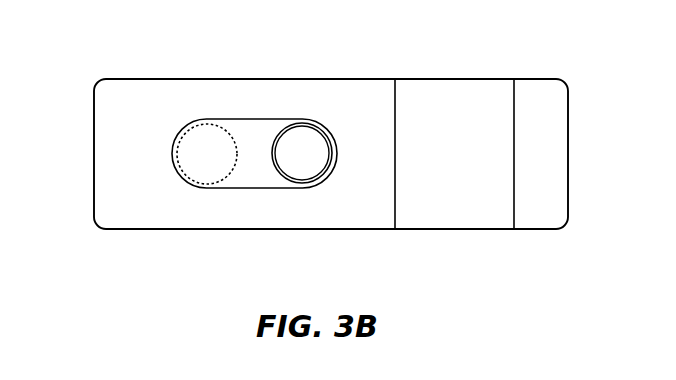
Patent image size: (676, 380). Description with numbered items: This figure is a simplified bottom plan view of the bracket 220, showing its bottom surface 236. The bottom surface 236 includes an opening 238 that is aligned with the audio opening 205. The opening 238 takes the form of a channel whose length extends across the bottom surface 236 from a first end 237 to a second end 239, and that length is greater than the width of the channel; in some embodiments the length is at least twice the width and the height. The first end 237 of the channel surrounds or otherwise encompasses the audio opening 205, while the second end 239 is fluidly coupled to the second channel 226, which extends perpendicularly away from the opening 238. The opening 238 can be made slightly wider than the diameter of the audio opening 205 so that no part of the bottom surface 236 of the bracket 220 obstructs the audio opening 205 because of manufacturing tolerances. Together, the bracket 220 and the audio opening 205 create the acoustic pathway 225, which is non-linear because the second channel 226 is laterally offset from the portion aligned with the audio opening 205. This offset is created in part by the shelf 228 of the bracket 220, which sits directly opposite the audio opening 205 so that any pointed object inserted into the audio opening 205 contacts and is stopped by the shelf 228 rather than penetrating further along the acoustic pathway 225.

The bracket 220 is at (352, 128).
The bottom surface 236 is at (137, 210).
The first end 237 is at (104, 151).
The audio opening 205 is at (142, 132).
The shelf 228 is at (192, 137).
The opening 238 is at (254, 115).
The second channel 226 is at (330, 136).
The acoustic pathway 225 is at (280, 192).
The second end 239 is at (362, 185).